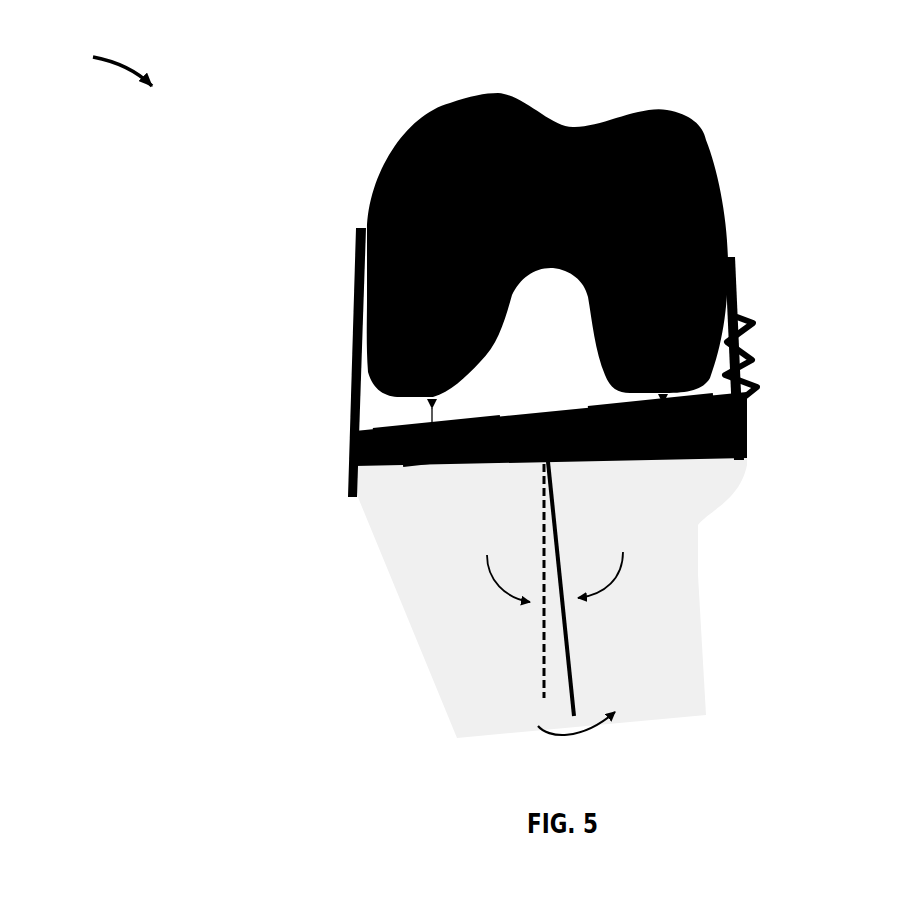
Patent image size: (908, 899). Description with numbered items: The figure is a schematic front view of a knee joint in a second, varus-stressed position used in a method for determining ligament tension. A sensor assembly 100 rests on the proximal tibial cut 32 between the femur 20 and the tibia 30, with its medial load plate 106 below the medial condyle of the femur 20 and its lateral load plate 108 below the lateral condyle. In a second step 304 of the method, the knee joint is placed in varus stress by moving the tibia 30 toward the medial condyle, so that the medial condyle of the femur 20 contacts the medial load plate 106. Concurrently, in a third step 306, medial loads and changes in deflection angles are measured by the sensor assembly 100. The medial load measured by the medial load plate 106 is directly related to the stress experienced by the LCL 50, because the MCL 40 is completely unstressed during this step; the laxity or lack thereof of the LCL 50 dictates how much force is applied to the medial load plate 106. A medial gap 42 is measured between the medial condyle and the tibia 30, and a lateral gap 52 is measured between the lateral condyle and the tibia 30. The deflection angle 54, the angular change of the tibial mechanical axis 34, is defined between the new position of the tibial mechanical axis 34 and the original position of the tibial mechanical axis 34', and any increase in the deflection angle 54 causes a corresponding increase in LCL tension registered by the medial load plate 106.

The second step 304 is at (92, 55).
The third step 306 is at (55, 75).
The femur 20 is at (720, 200).
The tibia 30 is at (657, 613).
The proximal tibial cut 32 is at (675, 442).
The tibial mechanical axis 34 is at (456, 608).
The original position of tibial mechanical axis 34' is at (418, 575).
The MCL 40 is at (755, 354).
The medial gap 42 is at (663, 418).
The LCL 50 is at (353, 395).
The lateral gap 52 is at (432, 417).
The deflection angle 54 is at (550, 602).
The sensor assembly 100 is at (715, 422).
The medial load plate 106 is at (690, 397).
The lateral load plate 108 is at (417, 418).